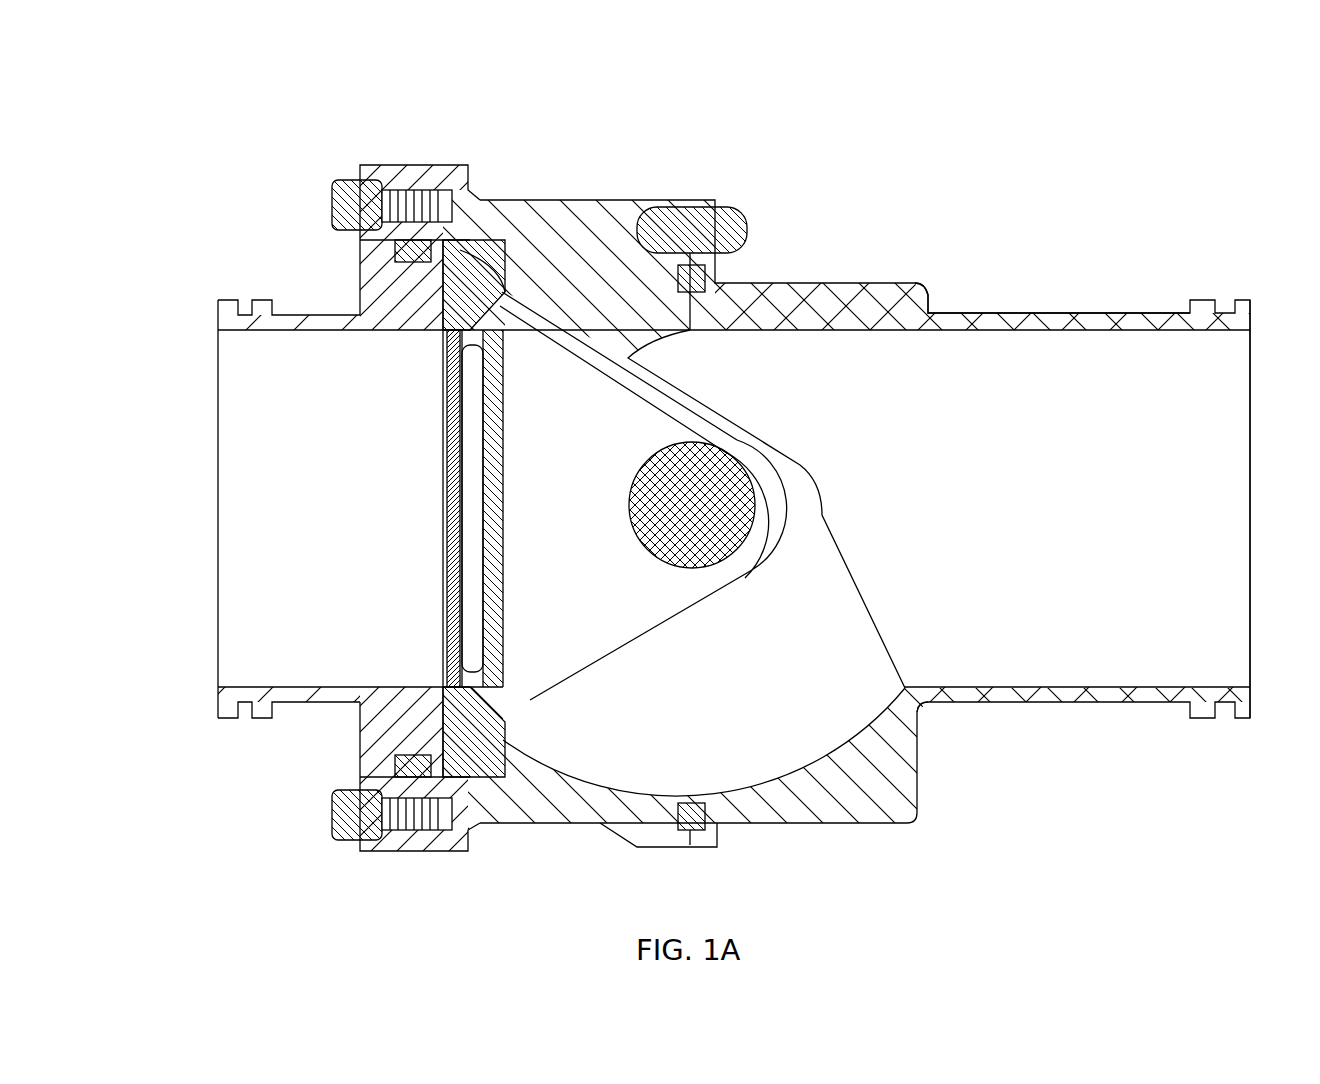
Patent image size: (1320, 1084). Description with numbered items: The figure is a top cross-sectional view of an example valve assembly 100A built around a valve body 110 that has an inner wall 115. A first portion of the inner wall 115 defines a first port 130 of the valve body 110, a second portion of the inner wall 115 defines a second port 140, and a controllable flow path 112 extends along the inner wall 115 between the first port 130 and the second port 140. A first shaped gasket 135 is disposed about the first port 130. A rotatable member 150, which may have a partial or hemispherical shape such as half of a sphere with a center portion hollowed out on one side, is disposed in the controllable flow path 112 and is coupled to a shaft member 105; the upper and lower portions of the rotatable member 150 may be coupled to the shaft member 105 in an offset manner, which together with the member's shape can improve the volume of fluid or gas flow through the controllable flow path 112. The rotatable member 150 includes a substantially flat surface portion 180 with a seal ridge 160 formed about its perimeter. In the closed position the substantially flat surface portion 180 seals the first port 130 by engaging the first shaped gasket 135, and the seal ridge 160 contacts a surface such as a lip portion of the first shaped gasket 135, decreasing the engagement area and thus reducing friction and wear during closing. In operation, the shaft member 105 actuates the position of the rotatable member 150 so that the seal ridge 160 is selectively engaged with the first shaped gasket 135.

The valve assembly 100A is at (1102, 122).
The shaft member 105 is at (718, 450).
The valve body 110 is at (605, 195).
The controllable flow path 112 is at (838, 533).
The inner wall 115 is at (805, 333).
The first port 130 is at (380, 563).
The first shaped gasket 135 is at (478, 270).
The second port 140 is at (1190, 527).
The rotatable member 150 is at (560, 603).
The seal ridge 160 is at (462, 683).
The substantially flat surface portion 180 is at (485, 490).